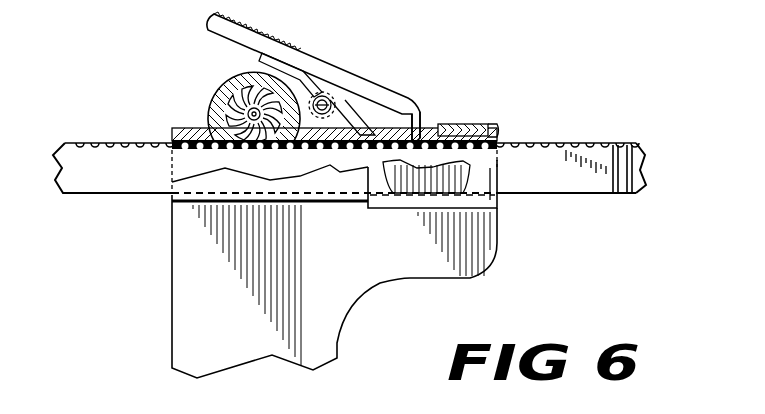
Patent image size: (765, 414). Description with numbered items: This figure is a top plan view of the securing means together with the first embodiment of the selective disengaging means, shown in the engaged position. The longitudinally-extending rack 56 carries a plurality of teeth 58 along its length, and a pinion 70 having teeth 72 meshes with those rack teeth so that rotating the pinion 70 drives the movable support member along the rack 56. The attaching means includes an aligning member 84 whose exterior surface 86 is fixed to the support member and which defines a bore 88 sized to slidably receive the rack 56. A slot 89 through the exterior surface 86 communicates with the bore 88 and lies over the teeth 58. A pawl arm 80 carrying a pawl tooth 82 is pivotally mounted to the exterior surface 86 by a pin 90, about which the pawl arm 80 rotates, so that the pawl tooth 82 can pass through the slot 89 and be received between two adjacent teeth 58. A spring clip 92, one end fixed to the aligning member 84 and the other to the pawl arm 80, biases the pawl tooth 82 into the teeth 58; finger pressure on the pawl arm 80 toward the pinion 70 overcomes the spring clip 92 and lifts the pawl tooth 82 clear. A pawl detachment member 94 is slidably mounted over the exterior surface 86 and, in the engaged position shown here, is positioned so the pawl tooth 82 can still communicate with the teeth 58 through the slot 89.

The rack 56 is at (638, 162).
The teeth 58 is at (612, 143).
The pinion 70 is at (230, 98).
The teeth 72 is at (225, 112).
The pawl arm 80 is at (385, 88).
The pawl tooth 82 is at (419, 112).
The aligning member 84 is at (497, 137).
The exterior surface 86 is at (497, 212).
The bore 88 is at (170, 198).
The slot 89 is at (445, 125).
The pin 90 is at (328, 96).
The spring clip 92 is at (300, 78).
The pawl detachment member 94 is at (490, 128).